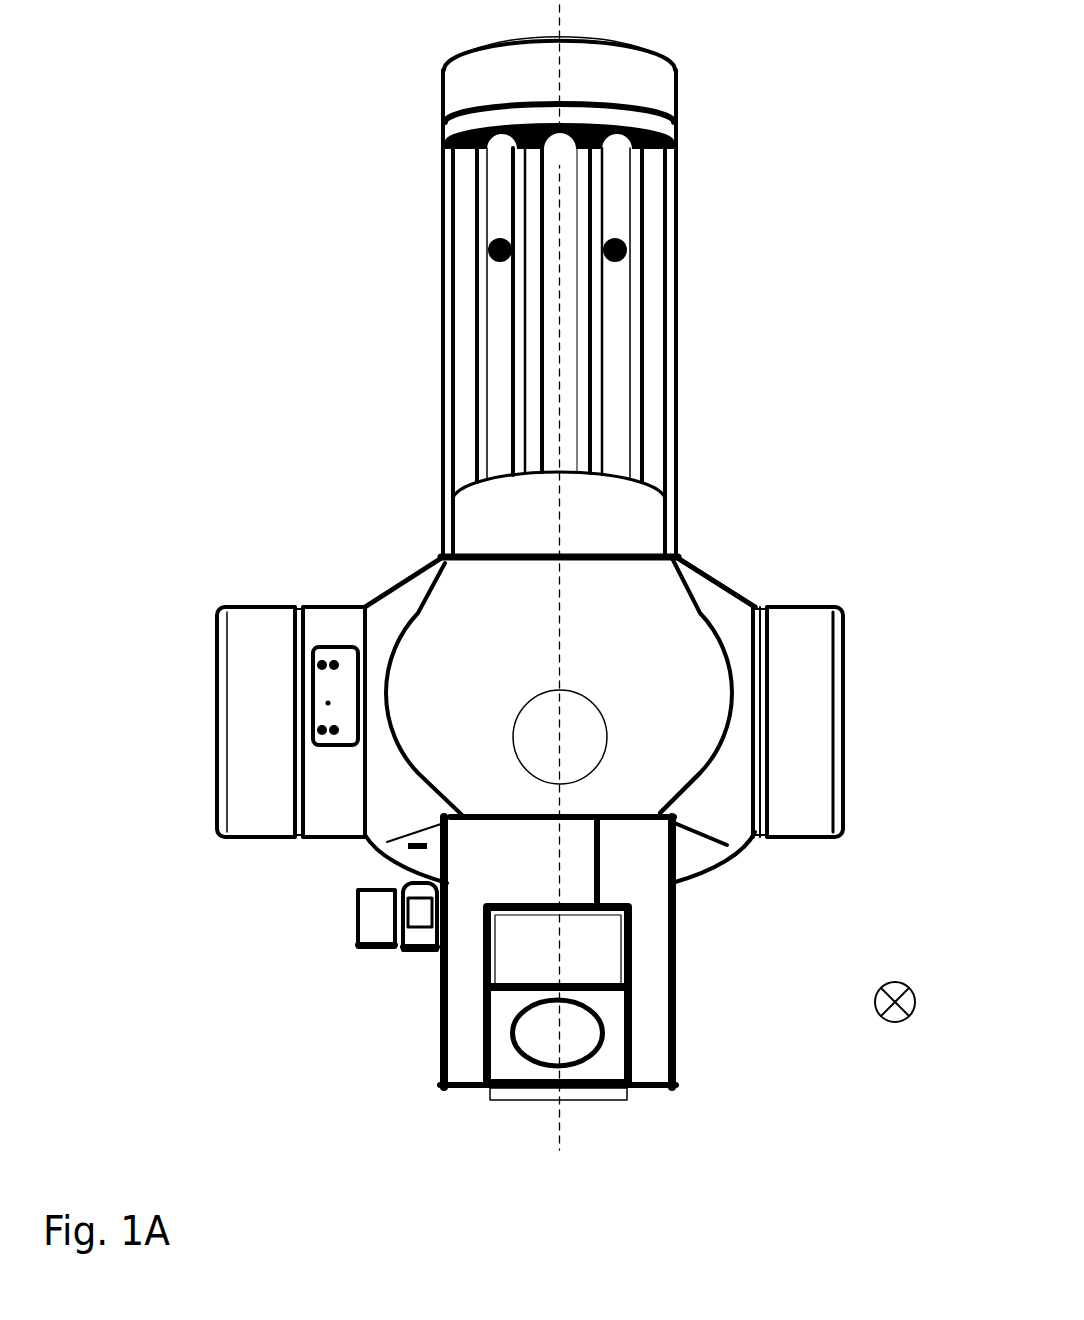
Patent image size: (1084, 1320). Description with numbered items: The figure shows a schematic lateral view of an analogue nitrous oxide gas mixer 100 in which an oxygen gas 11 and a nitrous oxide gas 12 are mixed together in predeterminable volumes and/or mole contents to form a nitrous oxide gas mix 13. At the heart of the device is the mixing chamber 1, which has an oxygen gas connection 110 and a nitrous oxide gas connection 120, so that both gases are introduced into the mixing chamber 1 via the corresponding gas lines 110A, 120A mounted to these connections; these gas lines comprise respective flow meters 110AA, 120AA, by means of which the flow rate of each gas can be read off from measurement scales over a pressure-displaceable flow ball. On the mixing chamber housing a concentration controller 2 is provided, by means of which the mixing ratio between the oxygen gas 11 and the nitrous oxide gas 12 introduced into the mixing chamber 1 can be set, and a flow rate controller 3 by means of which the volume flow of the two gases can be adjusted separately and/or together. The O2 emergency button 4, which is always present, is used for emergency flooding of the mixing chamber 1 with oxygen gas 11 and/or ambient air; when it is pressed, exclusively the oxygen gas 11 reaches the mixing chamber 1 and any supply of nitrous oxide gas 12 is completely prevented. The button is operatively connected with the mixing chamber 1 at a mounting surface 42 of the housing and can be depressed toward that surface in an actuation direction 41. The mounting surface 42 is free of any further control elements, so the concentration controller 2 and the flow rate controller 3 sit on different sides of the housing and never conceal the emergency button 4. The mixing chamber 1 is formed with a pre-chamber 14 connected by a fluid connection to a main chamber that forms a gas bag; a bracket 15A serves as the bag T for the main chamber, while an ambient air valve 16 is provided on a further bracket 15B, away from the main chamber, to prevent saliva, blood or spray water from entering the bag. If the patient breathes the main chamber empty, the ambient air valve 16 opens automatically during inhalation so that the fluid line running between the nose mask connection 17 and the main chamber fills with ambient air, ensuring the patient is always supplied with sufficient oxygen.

The analogue nitrous oxide gas mixer 100 is at (555, 587).
The mixing chamber 1 is at (688, 600).
The concentration controller 2 is at (257, 722).
The flow rate controller 3 is at (812, 688).
The O2 emergency button 4 is at (517, 730).
The oxygen gas 11 is at (620, 290).
The nitrous oxide gas 12 is at (497, 277).
The nitrous oxide gas mix 13 is at (686, 621).
The pre-chamber 14 is at (683, 750).
The bracket 15A is at (605, 952).
The further bracket 15B is at (655, 1050).
The ambient air valve 16 is at (608, 1099).
The nose mask connection 17 is at (366, 950).
The actuation direction 41 is at (913, 1002).
The mounting surface 42 is at (653, 773).
The oxygen gas connection 110 is at (623, 467).
The gas line 110A is at (620, 369).
The flow meter 110AA is at (620, 183).
The nitrous oxide gas connection 120 is at (503, 472).
The gas line 120A is at (503, 311).
The flow meter 120AA is at (490, 177).